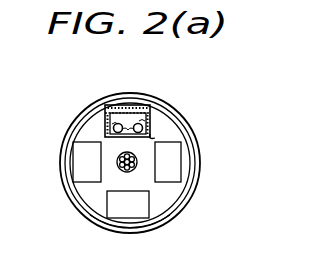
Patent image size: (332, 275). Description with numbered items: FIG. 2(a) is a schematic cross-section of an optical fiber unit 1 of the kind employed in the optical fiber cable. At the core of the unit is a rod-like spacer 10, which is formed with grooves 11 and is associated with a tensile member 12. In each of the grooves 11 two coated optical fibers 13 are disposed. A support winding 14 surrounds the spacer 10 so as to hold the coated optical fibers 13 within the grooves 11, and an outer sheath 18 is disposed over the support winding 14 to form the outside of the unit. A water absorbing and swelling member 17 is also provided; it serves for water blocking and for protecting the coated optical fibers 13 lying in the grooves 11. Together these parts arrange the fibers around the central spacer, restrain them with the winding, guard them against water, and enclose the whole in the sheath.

The optical fiber unit 1 is at (112, 68).
The rod-like spacer 10 is at (172, 190).
The grooves 11 is at (176, 158).
The tensile member 12 is at (136, 170).
The coated optical fibers 13 is at (152, 137).
The support winding 14 is at (154, 218).
The water absorbing and swelling member 17 is at (130, 106).
The outer sheath 18 is at (122, 233).